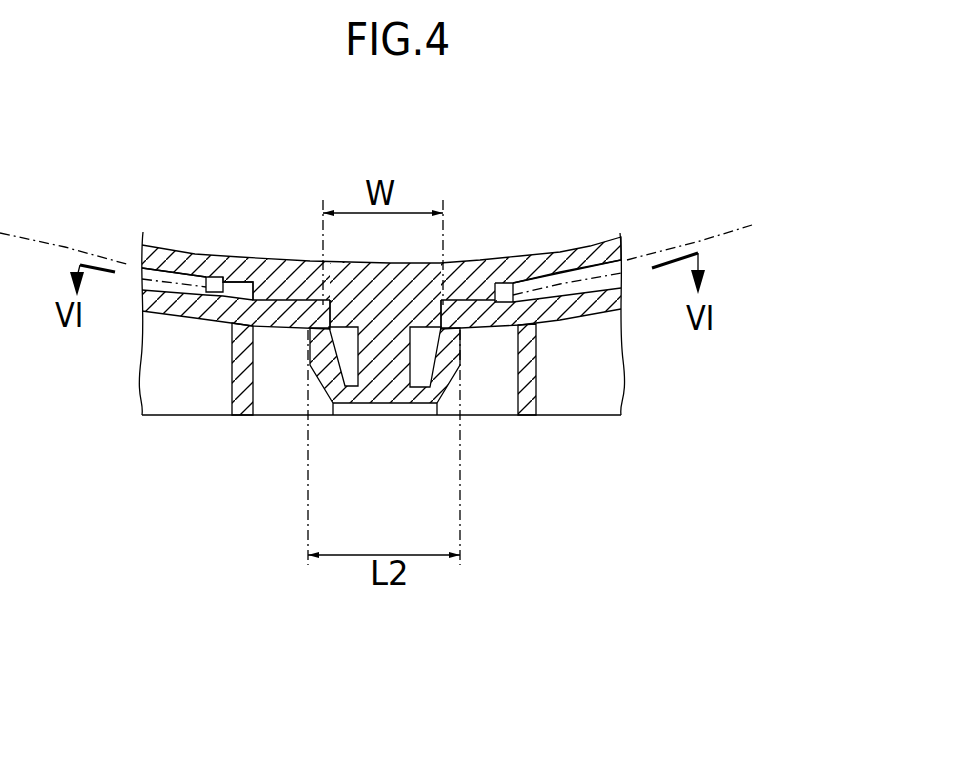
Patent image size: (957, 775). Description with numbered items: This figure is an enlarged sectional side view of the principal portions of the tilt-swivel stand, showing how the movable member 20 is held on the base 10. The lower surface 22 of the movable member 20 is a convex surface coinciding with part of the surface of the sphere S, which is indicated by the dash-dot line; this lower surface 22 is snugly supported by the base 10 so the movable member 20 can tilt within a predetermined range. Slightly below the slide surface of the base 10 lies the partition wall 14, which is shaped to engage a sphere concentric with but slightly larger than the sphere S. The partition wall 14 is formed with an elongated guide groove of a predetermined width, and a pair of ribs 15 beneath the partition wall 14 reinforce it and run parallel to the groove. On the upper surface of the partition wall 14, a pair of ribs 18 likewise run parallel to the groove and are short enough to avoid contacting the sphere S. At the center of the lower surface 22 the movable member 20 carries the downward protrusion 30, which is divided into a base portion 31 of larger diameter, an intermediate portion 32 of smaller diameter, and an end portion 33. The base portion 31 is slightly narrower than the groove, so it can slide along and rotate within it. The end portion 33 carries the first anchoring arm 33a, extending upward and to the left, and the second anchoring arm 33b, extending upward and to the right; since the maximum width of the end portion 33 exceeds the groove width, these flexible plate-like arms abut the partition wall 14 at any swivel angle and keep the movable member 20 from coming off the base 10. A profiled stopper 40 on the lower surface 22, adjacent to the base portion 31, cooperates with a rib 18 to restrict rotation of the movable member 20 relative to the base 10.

The base 10 is at (488, 430).
The partition wall 14 is at (590, 308).
The ribs 15 is at (232, 385).
The ribs 18 is at (216, 280).
The movable member 20 is at (478, 250).
The lower surface 22 is at (590, 270).
The downward protrusion 30 is at (380, 413).
The base portion 31 is at (316, 268).
The intermediate portion 32 is at (400, 350).
The end portion 33 is at (343, 403).
The first anchoring arm 33a is at (310, 366).
The second anchoring arm 33b is at (460, 358).
The stopper 40 is at (226, 280).
The sphere S is at (730, 233).